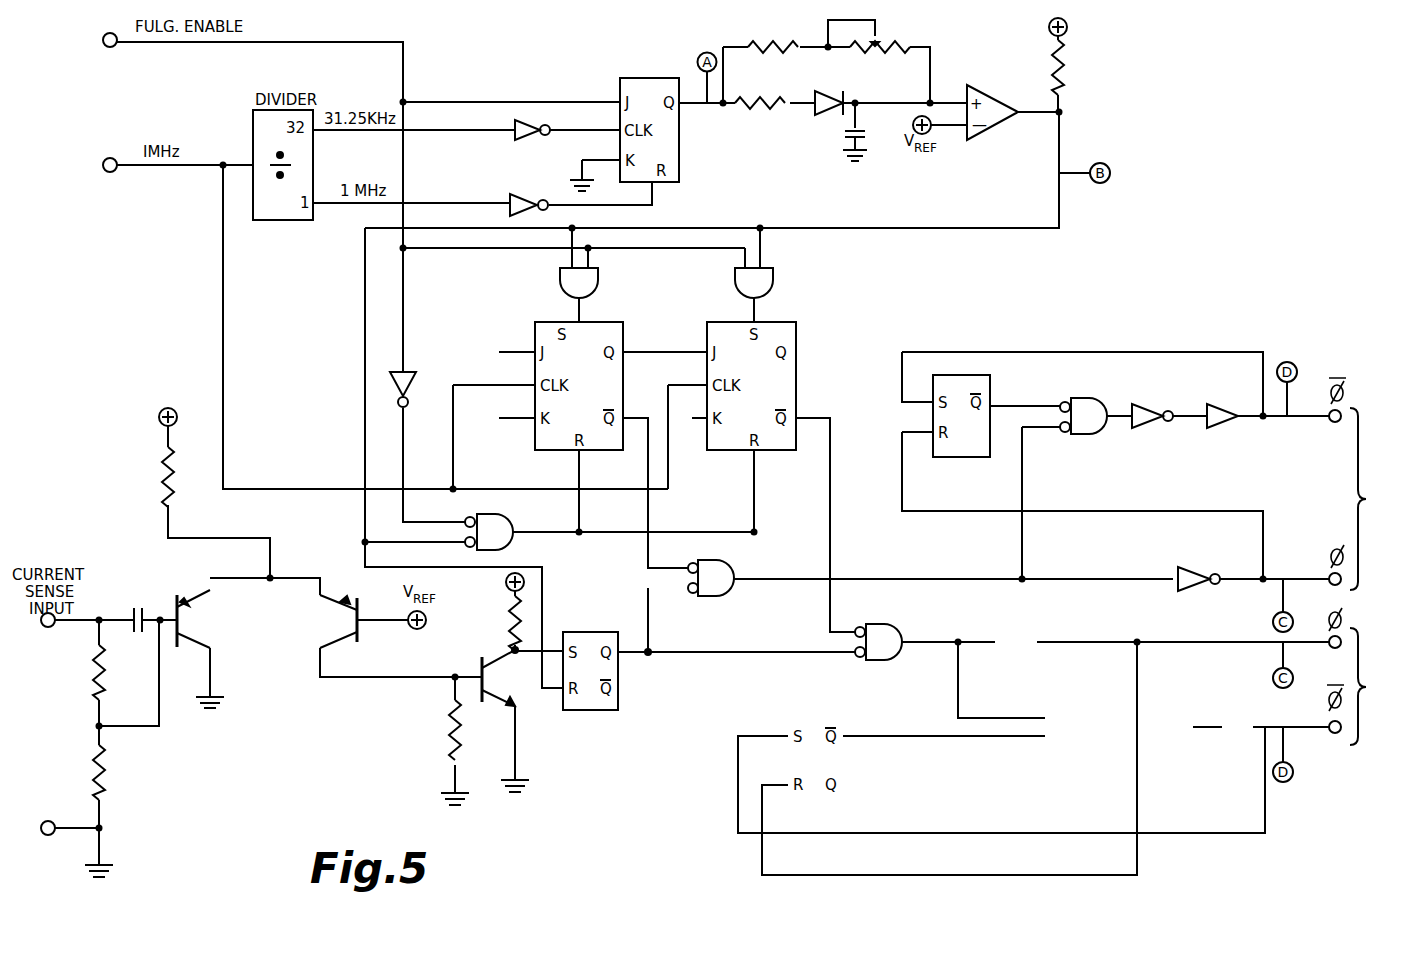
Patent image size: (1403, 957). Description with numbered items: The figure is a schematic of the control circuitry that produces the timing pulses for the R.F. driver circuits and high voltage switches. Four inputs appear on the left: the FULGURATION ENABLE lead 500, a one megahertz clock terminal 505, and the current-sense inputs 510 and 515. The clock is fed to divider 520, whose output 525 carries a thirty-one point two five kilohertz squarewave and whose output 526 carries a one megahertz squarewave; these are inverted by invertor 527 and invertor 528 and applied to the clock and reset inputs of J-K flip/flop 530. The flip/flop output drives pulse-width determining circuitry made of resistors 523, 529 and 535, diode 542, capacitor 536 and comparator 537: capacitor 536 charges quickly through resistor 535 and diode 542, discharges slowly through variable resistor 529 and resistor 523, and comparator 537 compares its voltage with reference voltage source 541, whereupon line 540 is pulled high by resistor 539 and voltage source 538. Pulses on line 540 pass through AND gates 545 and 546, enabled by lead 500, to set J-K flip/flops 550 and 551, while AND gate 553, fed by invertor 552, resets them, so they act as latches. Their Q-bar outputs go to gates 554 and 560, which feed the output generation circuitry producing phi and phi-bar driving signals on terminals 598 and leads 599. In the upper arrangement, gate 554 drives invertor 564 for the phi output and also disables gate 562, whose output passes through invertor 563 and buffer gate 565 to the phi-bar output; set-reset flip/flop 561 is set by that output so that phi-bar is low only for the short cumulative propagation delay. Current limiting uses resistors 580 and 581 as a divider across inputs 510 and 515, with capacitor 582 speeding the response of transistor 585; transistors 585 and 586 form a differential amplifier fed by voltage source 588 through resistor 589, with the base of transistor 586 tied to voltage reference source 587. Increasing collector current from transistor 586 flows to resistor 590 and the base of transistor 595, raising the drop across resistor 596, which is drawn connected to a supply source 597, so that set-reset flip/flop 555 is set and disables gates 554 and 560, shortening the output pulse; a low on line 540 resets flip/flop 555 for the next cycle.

The FULGURATION ENABLE lead 500 is at (112, 47).
The clock signal terminal 505 is at (112, 172).
The current-sense input 510 is at (52, 627).
The current-sense input 515 is at (44, 822).
The divider 520 is at (253, 130).
The resistor 523 is at (775, 32).
The divider output 525 is at (372, 129).
The divider output 526 is at (358, 210).
The invertor 527 is at (515, 133).
The invertor 528 is at (520, 196).
The variable resistor 529 is at (898, 10).
The J-K flip/flop 530 is at (635, 78).
The resistor 535 is at (762, 115).
The capacitor 536 is at (848, 128).
The comparator 537 is at (1008, 78).
The voltage source 538 is at (1064, 33).
The resistor 539 is at (1066, 72).
The line 540 is at (898, 232).
The reference voltage source 541 is at (912, 130).
The diode 542 is at (826, 90).
The AND gate 545 is at (592, 284).
The AND gate 546 is at (768, 286).
The J-K flip/flop 550 is at (623, 336).
The J-K flip/flop 551 is at (796, 342).
The invertor 552 is at (412, 385).
The AND gate 553 is at (510, 527).
The gate 554 is at (738, 554).
The set-reset flip/flop 555 is at (590, 710).
The gate 560 is at (898, 630).
The set-reset flip/flop 561 is at (990, 391).
The gate 562 is at (1112, 390).
The invertor 563 is at (1148, 404).
The invertor 564 is at (1178, 574).
The buffer gate 565 is at (1235, 390).
The resistor 580 is at (104, 686).
The resistor 581 is at (104, 778).
The capacitor 582 is at (128, 610).
The transistor 585 is at (180, 625).
The transistor 586 is at (350, 628).
The voltage reference source 587 is at (408, 626).
The voltage source 588 is at (160, 424).
The resistor 589 is at (162, 478).
The resistor 590 is at (449, 732).
The transistor 595 is at (486, 678).
The resistor 596 is at (510, 620).
The voltage source 597 is at (506, 584).
The terminals 598 is at (1374, 499).
The leads 599 is at (1374, 686).